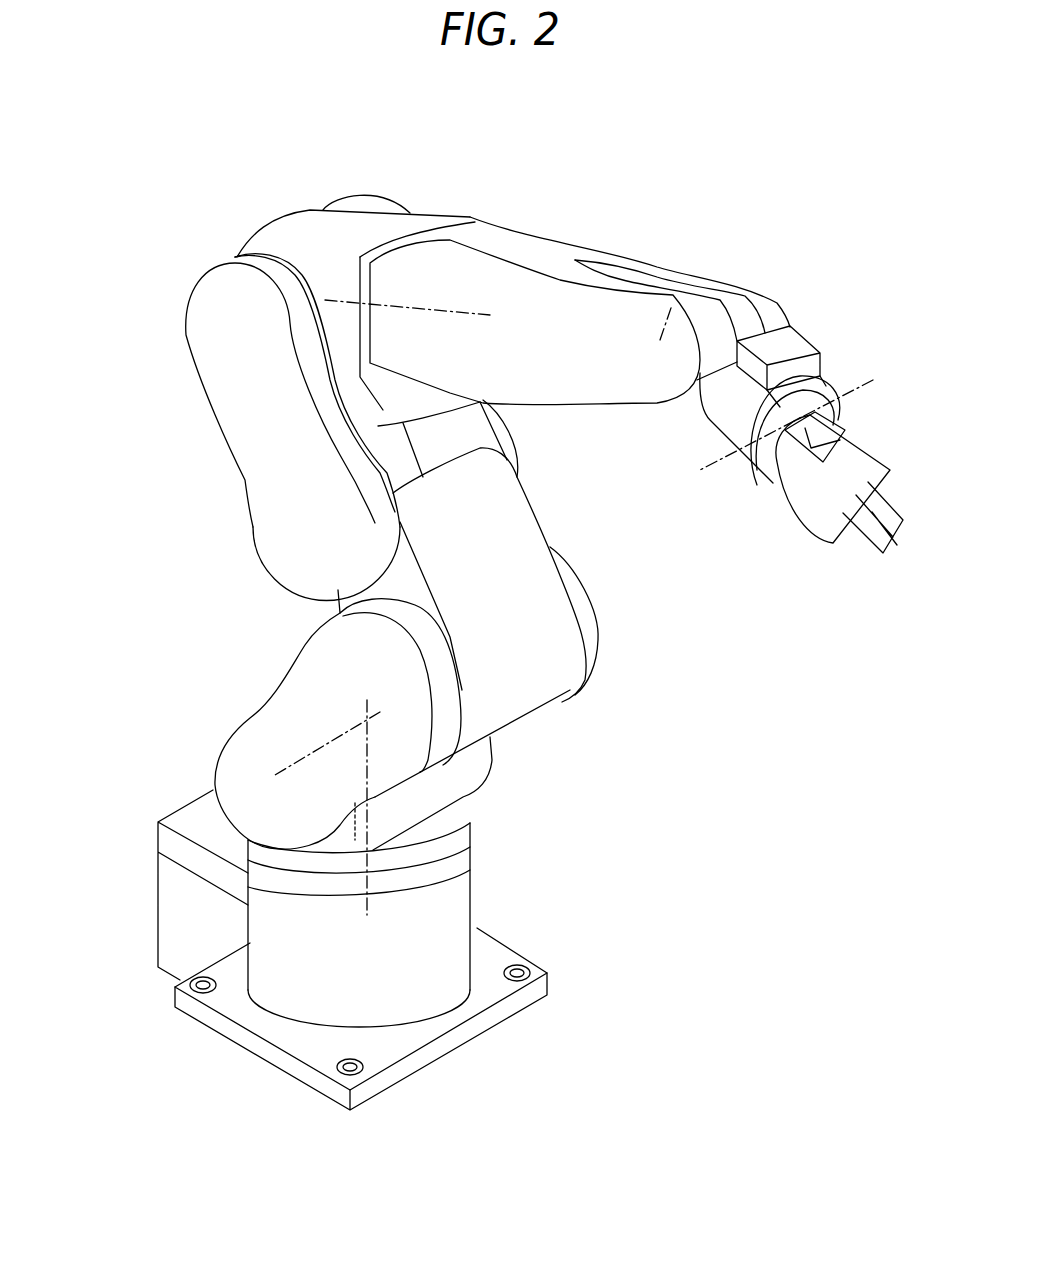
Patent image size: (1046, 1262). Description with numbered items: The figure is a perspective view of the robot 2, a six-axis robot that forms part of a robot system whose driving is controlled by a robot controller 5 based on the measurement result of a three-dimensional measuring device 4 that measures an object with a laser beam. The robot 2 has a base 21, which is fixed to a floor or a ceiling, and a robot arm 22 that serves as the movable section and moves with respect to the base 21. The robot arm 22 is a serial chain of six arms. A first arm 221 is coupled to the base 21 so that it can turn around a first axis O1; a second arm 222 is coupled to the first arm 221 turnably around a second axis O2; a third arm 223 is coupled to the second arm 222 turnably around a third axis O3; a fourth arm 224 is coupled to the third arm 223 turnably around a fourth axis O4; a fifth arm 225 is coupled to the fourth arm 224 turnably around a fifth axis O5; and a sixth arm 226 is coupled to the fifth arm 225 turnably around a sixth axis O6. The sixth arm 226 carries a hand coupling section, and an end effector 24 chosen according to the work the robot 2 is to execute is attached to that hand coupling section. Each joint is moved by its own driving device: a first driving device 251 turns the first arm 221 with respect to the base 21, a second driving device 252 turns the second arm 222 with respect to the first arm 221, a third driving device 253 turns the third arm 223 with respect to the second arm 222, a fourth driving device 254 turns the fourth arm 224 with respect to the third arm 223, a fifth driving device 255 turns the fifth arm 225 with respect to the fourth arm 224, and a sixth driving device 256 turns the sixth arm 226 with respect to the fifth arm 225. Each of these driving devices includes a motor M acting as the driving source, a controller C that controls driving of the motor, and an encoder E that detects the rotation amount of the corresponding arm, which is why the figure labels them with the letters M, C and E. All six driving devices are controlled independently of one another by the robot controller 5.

The robot 2 is at (609, 196).
The three-dimensional measuring device 4 is at (790, 343).
The robot controller 5 is at (190, 897).
The base 21 is at (287, 1000).
The robot arm 22 is at (308, 198).
The end effector 24 is at (870, 460).
The first arm 221 is at (240, 787).
The second arm 222 is at (542, 655).
The third arm 223 is at (297, 233).
The fourth arm 224 is at (513, 277).
The fifth arm 225 is at (713, 410).
The sixth arm 226 is at (775, 472).
The first driving device 251 is at (427, 903).
The second driving device 252 is at (573, 647).
The third driving device 253 is at (233, 357).
The fourth driving device 254 is at (333, 290).
The fifth driving device 255 is at (683, 282).
The sixth driving device 256 is at (745, 418).
The first axis O1 is at (473, 825).
The second axis O2 is at (593, 583).
The third axis O3 is at (233, 310).
The fourth axis O4 is at (457, 315).
The fifth axis O5 is at (605, 367).
The sixth axis O6 is at (795, 411).